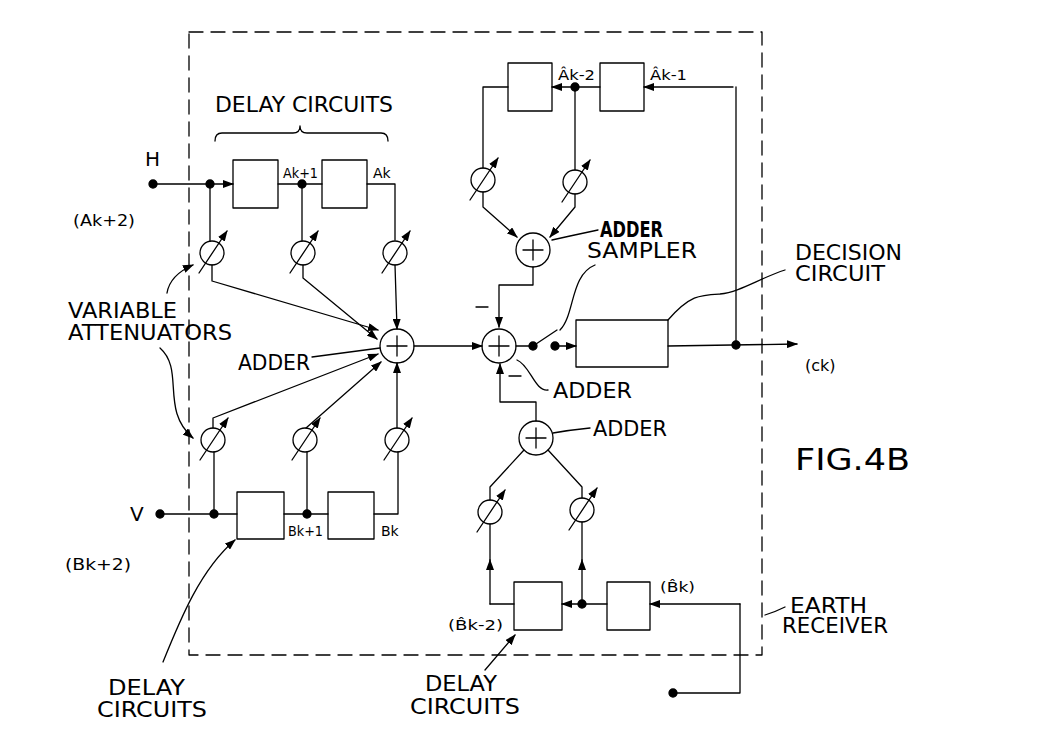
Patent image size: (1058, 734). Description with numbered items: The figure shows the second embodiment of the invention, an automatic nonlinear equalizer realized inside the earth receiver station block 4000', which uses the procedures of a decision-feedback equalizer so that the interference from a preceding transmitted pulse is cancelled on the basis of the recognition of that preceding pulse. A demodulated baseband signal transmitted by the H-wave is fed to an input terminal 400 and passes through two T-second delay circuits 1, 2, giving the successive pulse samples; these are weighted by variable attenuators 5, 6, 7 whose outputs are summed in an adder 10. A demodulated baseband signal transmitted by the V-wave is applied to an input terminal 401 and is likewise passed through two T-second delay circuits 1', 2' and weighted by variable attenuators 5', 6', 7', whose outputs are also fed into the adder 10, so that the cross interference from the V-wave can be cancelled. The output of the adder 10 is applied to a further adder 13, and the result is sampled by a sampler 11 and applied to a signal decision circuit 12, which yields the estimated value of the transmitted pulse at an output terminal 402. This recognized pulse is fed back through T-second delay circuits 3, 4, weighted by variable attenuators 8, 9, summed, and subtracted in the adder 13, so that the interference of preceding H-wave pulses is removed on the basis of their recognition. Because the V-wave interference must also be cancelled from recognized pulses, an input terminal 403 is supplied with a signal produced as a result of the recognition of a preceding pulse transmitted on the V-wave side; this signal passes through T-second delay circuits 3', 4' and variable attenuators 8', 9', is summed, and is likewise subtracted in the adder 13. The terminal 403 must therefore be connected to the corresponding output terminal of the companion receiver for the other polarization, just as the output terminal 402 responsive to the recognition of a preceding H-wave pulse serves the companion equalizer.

The T-second delay circuit 1 is at (235, 170).
The T-second delay circuit 2 is at (364, 170).
The T-second delay circuit 3 is at (622, 72).
The T-second delay circuit 4 is at (522, 74).
The variable attenuator 5 is at (227, 252).
The variable attenuator 6 is at (318, 252).
The variable attenuator 7 is at (416, 252).
The variable attenuator 8 is at (598, 181).
The variable attenuator 9 is at (467, 156).
The adder 10 is at (408, 332).
The sampler 11 is at (555, 328).
The signal decision circuit 12 is at (622, 326).
The adder 13 is at (485, 360).
The T-second delay circuit 1' is at (260, 537).
The T-second delay circuit 2' is at (351, 537).
The T-second delay circuit 3' is at (628, 589).
The T-second delay circuit 4' is at (538, 590).
The variable attenuator 5' is at (232, 439).
The variable attenuator 6' is at (324, 439).
The variable attenuator 7' is at (416, 439).
The variable attenuator 8' is at (610, 509).
The variable attenuator 9' is at (473, 511).
The input terminal 400 is at (153, 184).
The input terminal 401 is at (160, 514).
The output terminal 402 is at (756, 342).
The input terminal 403 is at (673, 693).
The earth receiver station block 4000' is at (516, 343).